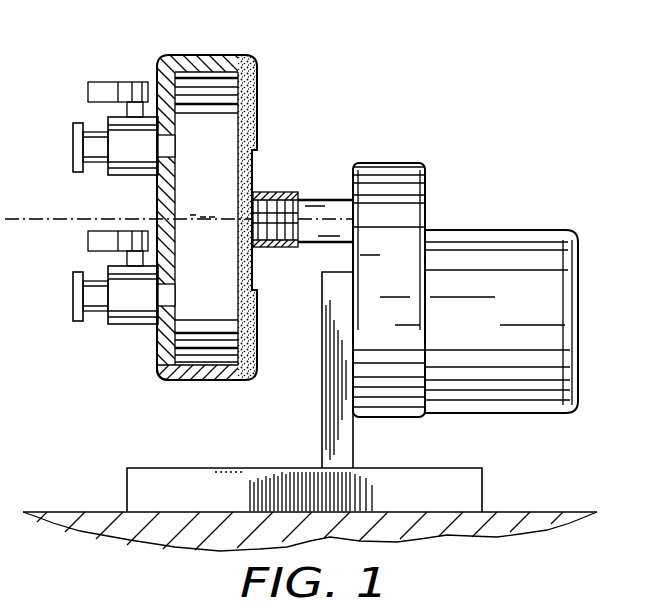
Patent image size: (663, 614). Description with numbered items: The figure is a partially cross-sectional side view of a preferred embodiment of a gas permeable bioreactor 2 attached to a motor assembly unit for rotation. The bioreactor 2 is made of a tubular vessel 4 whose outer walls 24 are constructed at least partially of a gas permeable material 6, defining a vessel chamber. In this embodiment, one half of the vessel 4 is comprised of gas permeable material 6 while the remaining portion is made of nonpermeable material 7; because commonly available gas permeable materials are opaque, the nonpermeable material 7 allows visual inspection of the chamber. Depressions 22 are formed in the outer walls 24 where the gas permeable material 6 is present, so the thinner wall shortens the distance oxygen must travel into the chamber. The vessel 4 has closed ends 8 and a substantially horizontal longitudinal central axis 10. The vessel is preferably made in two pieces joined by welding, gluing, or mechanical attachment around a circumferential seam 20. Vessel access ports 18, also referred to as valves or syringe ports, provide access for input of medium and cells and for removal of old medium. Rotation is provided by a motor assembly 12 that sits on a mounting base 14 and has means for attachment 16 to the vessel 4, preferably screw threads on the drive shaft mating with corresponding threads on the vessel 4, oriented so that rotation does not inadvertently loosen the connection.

The bioreactor 2 is at (104, 58).
The tubular vessel 4 is at (206, 220).
The gas permeable material 6 is at (246, 57).
The nonpermeable material 7 is at (167, 50).
The closed ends 8 is at (256, 173).
The longitudinal central axis 10 is at (335, 177).
The motor assembly 12 is at (532, 230).
The mounting base 14 is at (458, 482).
The means for attachment 16 is at (268, 247).
The vessel access ports 18 is at (115, 176).
The circumferential seam 20 is at (203, 57).
The depressions 22 is at (254, 128).
The outer walls 24 is at (155, 366).